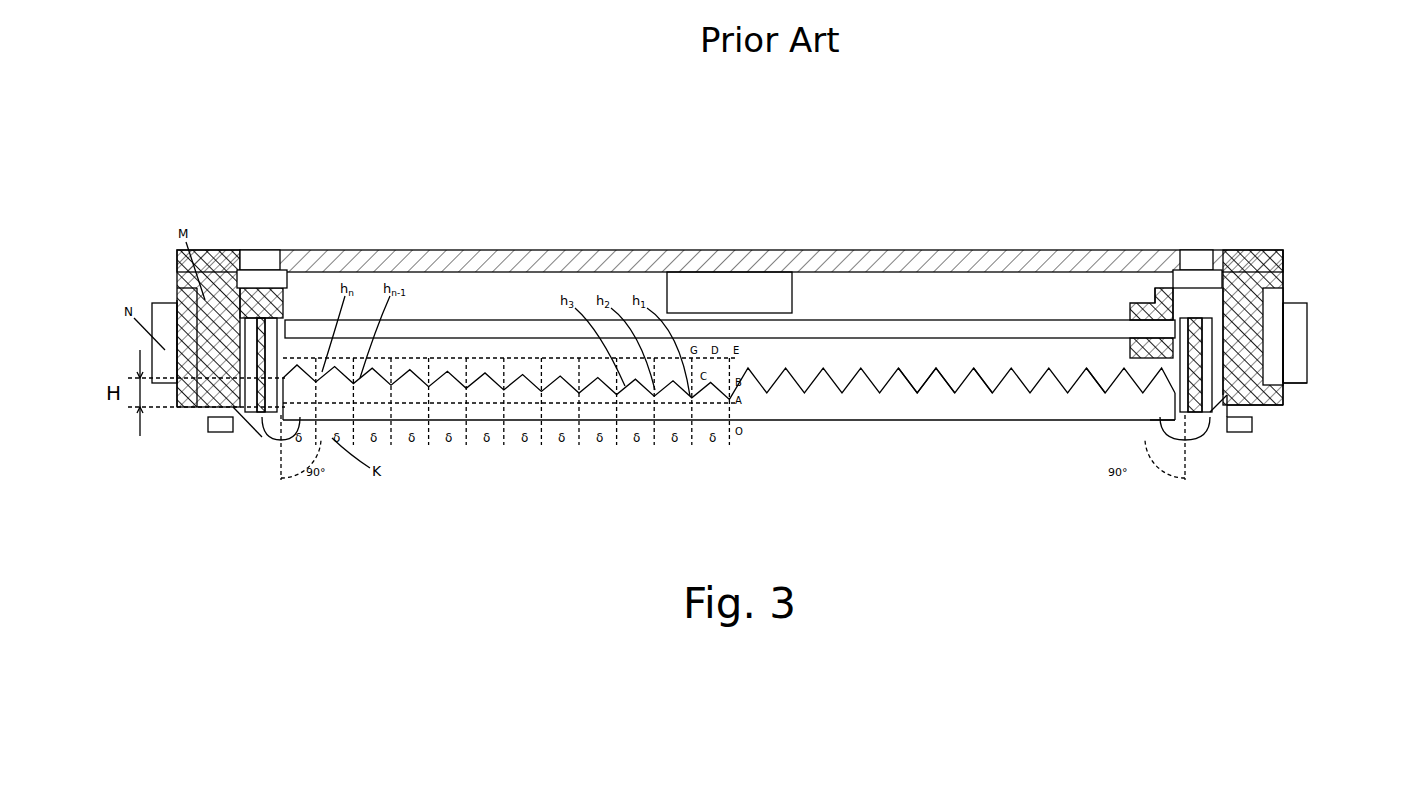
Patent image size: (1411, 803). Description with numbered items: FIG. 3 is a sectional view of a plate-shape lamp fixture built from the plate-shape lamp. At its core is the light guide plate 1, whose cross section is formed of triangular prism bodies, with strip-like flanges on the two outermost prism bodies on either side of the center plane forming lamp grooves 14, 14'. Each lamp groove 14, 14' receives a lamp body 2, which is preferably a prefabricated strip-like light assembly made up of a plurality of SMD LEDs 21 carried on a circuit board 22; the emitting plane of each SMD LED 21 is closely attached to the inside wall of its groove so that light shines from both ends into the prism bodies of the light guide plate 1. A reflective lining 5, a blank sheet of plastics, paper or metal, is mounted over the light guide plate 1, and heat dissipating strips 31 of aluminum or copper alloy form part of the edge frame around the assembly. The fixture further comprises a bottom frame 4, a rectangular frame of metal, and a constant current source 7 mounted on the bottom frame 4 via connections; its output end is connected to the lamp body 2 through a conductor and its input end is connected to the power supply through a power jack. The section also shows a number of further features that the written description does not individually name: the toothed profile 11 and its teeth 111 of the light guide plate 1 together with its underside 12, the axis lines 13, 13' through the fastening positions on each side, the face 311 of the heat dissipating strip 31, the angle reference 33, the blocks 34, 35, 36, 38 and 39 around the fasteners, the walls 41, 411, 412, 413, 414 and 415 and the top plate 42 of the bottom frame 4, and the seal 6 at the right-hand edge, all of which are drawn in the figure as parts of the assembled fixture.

The light guide plate 1 is at (823, 400).
The serrated surface 11 is at (920, 372).
The tooth 111 is at (1100, 372).
The bottom surface of base plate 12 is at (930, 422).
The axis line 13 is at (1209, 456).
The axis line 13' is at (263, 461).
The lamp groove 14 is at (1157, 254).
The lamp groove 14' is at (159, 327).
The lamp body 2 is at (1270, 405).
The SMD LED 21 is at (1170, 422).
The circuit board 22 is at (1213, 432).
The heat dissipating strip 31 is at (1308, 336).
The bottom face of side block 311 is at (1308, 383).
The angle reference 33 is at (1160, 450).
The step block 34 is at (1145, 320).
The flange 35 is at (300, 440).
The flange 36 is at (1255, 425).
The recess 38 is at (1200, 282).
The side wall 39 is at (1245, 272).
The bottom frame 4 is at (1285, 252).
The outer wall 41 is at (1265, 265).
The inner wall 411 is at (1130, 300).
The recess 412 is at (1276, 306).
The left frame block 413 is at (244, 268).
The notch 414 is at (262, 258).
The notch 415 is at (1186, 258).
The top plate 42 is at (590, 252).
The reflective lining 5 is at (425, 325).
The seal 6 is at (1298, 378).
The constant current source 7 is at (745, 300).